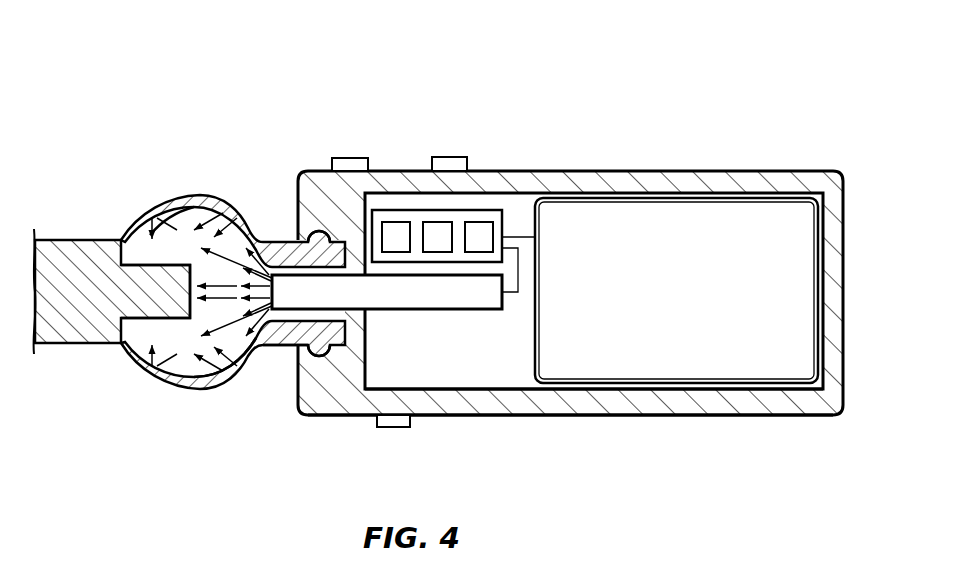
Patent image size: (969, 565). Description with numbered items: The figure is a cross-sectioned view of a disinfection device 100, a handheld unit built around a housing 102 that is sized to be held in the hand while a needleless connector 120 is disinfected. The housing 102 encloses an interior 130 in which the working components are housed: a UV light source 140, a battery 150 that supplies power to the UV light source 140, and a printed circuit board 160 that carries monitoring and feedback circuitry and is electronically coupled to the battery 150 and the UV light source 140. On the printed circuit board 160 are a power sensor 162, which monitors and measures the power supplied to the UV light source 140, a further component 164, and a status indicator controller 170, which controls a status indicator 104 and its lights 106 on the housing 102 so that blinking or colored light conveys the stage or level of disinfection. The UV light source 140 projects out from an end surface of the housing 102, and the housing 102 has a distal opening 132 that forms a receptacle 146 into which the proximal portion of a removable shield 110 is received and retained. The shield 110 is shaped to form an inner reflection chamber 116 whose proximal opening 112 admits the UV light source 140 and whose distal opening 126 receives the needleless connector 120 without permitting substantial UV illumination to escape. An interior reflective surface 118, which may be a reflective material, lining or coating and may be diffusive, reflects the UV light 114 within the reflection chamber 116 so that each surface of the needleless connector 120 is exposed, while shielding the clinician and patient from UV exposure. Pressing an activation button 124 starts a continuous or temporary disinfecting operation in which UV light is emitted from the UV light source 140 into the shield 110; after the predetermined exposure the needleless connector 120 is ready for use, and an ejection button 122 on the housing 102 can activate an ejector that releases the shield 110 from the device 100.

The disinfection device 100 is at (436, 253).
The housing 102 is at (696, 171).
The status indicator 104 is at (239, 274).
The lights 106 is at (345, 157).
The shield 110 is at (185, 388).
The proximal opening 112 is at (337, 352).
The UV light 114 is at (240, 372).
The reflection chamber 116 is at (240, 208).
The interior reflective surface 118 is at (180, 212).
The needleless connector 120 is at (110, 331).
The ejection button 122 is at (392, 427).
The activation button 124 is at (448, 152).
The distal opening 126 is at (110, 343).
The interior 130 is at (640, 387).
The distal opening 132 is at (297, 237).
The UV light source 140 is at (407, 310).
The receptacle 146 is at (290, 353).
The battery 150 is at (694, 315).
The printed circuit board 160 is at (488, 179).
The power sensor 162 is at (393, 226).
The memory 164 is at (433, 226).
The status indicator controller 170 is at (482, 222).